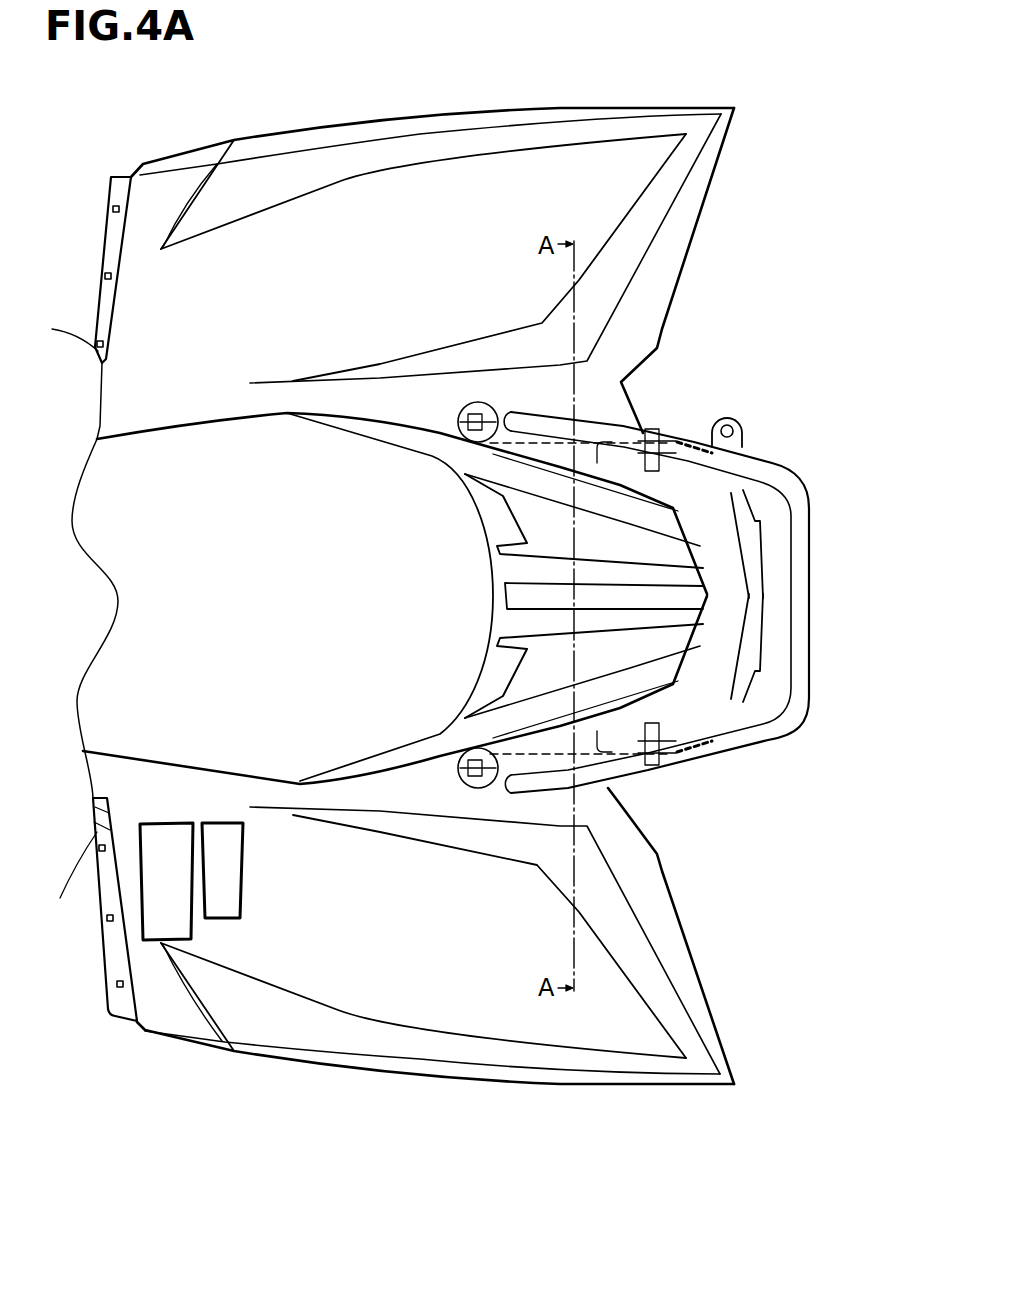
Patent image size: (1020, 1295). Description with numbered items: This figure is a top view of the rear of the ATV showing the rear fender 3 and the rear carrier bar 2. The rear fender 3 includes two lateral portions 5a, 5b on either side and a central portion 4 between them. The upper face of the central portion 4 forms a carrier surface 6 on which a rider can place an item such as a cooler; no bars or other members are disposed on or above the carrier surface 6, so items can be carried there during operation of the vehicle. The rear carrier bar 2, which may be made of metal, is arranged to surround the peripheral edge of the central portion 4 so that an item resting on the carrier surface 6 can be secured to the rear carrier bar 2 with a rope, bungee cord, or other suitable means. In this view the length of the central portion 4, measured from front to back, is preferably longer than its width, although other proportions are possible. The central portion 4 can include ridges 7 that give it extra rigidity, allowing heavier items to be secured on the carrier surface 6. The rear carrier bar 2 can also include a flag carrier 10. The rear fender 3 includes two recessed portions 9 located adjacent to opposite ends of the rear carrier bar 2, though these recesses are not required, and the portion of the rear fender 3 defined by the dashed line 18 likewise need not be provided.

The rear carrier bar 2 is at (803, 568).
The rear fender 3 is at (493, 659).
The central portion 4 is at (657, 595).
The lateral portion 5a is at (390, 203).
The lateral portion 5b is at (450, 1003).
The carrier surface 6 is at (583, 602).
The ridges 7 is at (650, 577).
The recessed portions 9 is at (612, 402).
The flag carrier 10 is at (737, 414).
The dashed line 18 is at (491, 397).